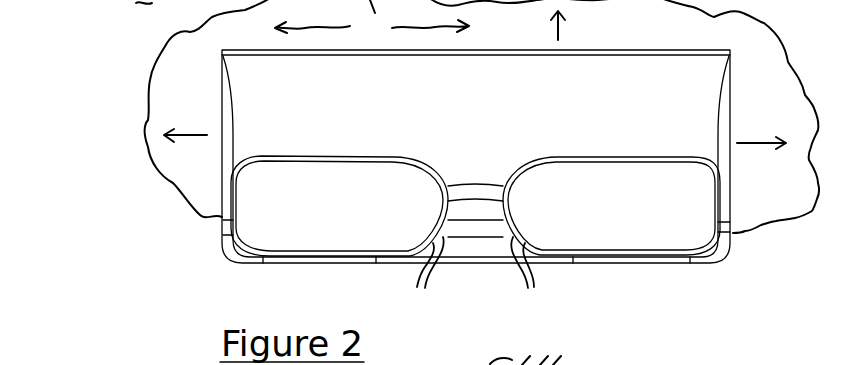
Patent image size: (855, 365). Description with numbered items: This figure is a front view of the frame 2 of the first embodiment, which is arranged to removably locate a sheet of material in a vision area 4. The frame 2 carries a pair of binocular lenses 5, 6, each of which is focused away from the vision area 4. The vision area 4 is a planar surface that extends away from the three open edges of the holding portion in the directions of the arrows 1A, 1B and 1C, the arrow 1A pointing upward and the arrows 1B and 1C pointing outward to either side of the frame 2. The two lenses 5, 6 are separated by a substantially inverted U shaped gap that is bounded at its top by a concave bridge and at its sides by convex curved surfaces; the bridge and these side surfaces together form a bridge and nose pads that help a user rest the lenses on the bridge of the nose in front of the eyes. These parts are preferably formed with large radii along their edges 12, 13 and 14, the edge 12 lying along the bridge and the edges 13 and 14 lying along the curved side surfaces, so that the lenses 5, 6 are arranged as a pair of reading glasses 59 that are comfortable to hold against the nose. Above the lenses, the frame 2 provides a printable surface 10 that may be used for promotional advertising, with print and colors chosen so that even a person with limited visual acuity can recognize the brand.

The frame 2 is at (233, 250).
The vision area 4 is at (372, 29).
The binocular lens 5 is at (342, 218).
The binocular lens 6 is at (638, 222).
The printable surface 10 is at (346, 104).
The edge of the bridge 12 is at (502, 218).
The edge of the curved side surface 13 is at (426, 277).
The edge of the curved side surface 14 is at (530, 277).
The pair of reading glasses 59 is at (571, 138).
The arrow 1A is at (576, 26).
The arrow 1B is at (185, 120).
The arrow 1C is at (763, 162).